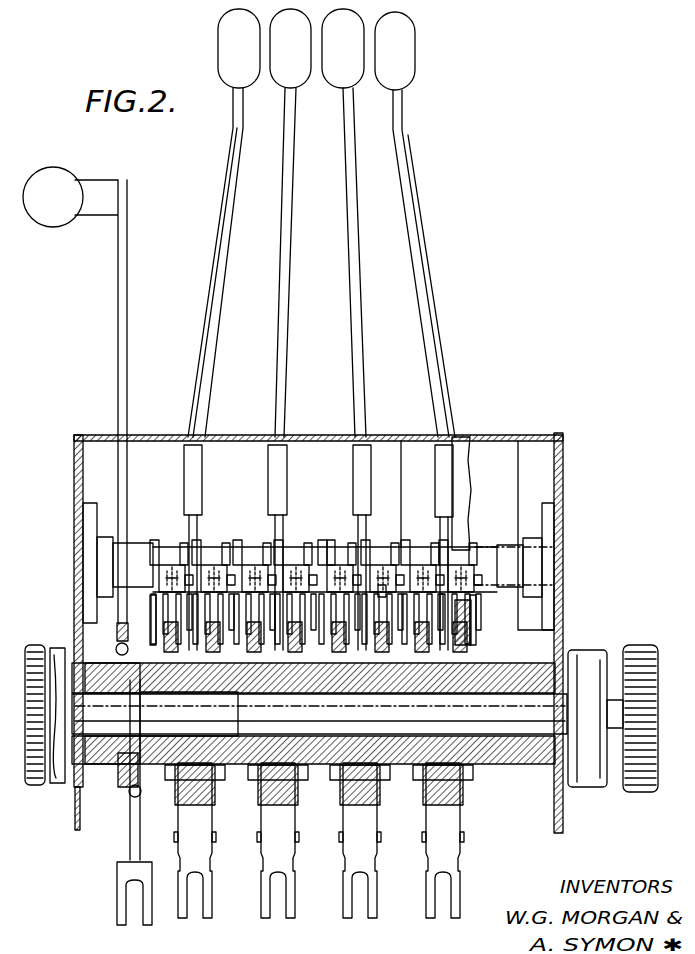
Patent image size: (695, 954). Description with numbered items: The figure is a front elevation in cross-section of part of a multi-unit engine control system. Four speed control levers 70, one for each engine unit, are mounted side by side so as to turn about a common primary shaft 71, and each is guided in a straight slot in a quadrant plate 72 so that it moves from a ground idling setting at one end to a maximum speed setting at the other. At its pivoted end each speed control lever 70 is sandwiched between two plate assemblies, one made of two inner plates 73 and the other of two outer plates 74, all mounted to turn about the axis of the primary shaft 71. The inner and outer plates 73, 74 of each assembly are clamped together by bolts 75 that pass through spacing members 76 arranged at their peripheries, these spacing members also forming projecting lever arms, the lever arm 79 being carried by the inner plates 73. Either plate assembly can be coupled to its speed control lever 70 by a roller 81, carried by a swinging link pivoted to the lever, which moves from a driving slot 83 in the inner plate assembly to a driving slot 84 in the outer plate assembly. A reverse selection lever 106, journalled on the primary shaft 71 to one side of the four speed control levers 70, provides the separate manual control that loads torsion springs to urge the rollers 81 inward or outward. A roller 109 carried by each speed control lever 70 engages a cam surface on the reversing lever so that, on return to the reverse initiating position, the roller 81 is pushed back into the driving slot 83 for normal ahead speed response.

The speed control lever 70 is at (284, 271).
The primary shaft 71 is at (527, 686).
The quadrant plate 72 is at (229, 436).
The inner plates 73 is at (377, 597).
The outer plates 74 is at (255, 568).
The bolts 75 is at (342, 835).
The spacing member 76 is at (272, 862).
The lever arm 79 is at (345, 893).
The roller 81 is at (474, 620).
The driving slot 83 is at (384, 590).
The driving slot 84 is at (331, 562).
The reverse selection lever 106 is at (126, 280).
The roller 109 is at (397, 548).